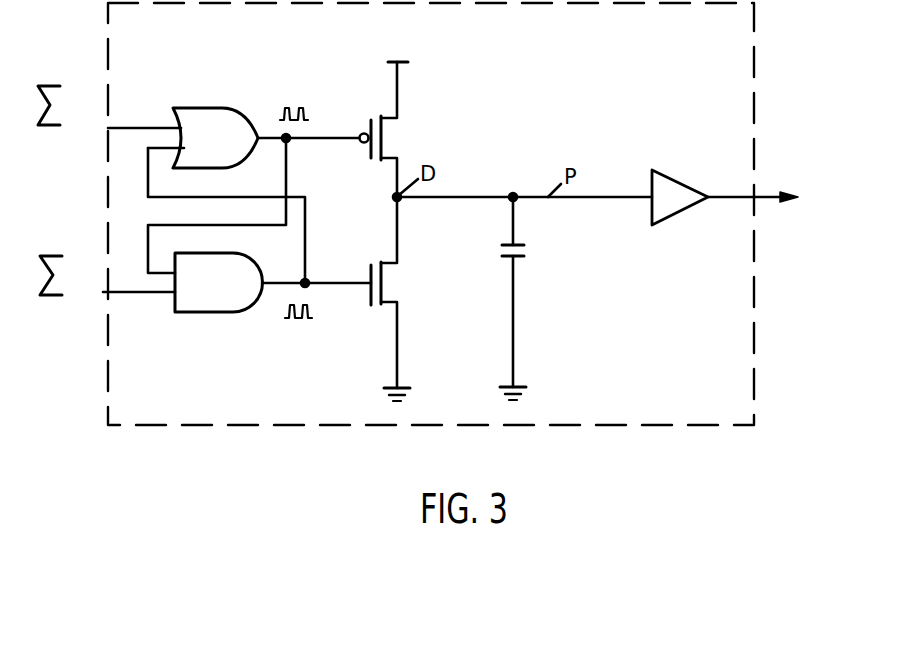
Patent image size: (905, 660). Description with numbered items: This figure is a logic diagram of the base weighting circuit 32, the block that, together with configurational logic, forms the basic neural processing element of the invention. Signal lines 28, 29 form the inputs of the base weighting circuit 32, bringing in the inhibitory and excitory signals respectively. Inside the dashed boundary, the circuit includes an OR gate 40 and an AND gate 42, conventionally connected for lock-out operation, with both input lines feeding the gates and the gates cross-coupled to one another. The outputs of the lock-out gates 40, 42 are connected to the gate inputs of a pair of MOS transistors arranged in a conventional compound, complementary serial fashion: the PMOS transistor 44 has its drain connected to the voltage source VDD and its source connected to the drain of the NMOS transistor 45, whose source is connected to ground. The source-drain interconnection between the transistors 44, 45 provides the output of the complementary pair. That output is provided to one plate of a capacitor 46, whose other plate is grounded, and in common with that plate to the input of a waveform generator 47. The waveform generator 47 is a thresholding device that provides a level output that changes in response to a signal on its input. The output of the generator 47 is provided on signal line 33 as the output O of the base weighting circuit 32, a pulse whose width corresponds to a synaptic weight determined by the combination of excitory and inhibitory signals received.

The signal line 28 is at (107, 259).
The signal line 29 is at (106, 126).
The base weighting circuit 32 is at (753, 63).
The signal line 33 is at (765, 200).
The OR gate 40 is at (200, 108).
The AND gate 42 is at (200, 313).
The PMOS transistor 44 is at (383, 115).
The NMOS transistor 45 is at (385, 305).
The capacitor 46 is at (522, 257).
The waveform generator 47 is at (665, 219).